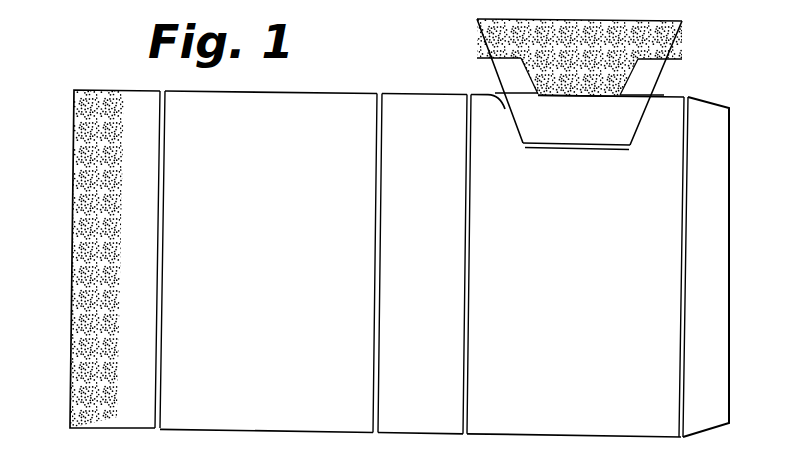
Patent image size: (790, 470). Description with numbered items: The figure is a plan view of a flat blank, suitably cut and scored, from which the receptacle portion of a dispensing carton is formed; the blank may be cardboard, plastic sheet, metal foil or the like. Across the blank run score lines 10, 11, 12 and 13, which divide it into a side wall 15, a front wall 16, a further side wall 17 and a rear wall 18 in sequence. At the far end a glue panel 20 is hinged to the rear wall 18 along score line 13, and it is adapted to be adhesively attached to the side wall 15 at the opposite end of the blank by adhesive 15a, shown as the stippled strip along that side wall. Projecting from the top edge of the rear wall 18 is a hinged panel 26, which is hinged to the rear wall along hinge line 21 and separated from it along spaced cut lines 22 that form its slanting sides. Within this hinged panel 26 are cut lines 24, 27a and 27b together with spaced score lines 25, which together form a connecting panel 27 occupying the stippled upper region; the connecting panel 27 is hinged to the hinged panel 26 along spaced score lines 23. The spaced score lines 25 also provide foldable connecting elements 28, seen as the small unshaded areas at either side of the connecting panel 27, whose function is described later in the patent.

The score line 10 is at (162, 267).
The score line 11 is at (377, 230).
The score line 12 is at (468, 275).
The score line 13 is at (683, 303).
The side wall 15 is at (147, 230).
The adhesive 15a is at (90, 225).
The front wall 16 is at (273, 304).
The side wall 17 is at (430, 294).
The rear wall 18 is at (580, 306).
The glue panel 20 is at (722, 286).
The hinge line 21 is at (572, 149).
The cut lines 22 is at (513, 123).
The score lines 23 is at (522, 96).
The cut line 24 is at (581, 94).
The score lines 25 is at (487, 56).
The hinged panel 26 is at (583, 124).
The connecting panel 27 is at (588, 52).
The cut line 27a is at (536, 92).
The cut line 27b is at (636, 60).
The foldable connecting elements 28 is at (517, 84).